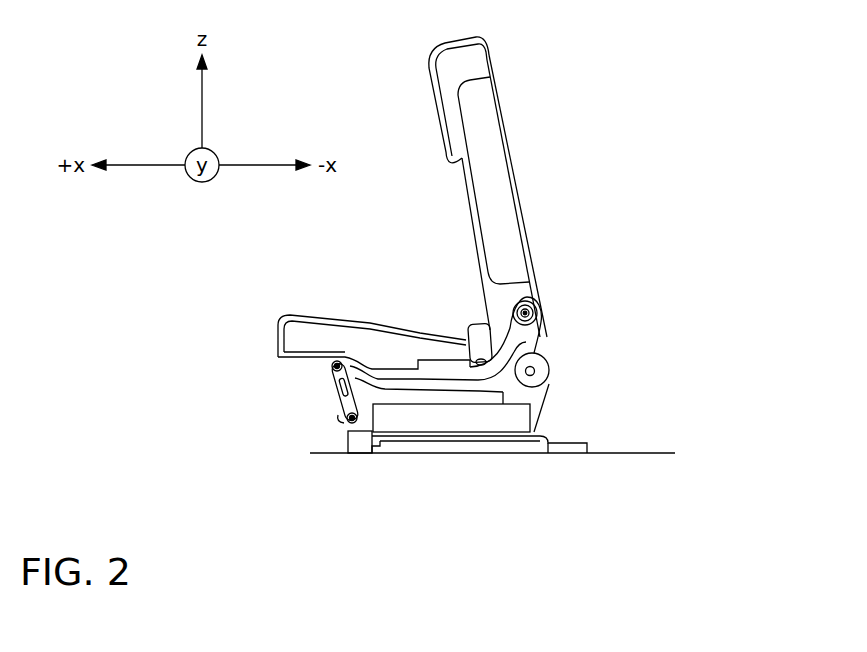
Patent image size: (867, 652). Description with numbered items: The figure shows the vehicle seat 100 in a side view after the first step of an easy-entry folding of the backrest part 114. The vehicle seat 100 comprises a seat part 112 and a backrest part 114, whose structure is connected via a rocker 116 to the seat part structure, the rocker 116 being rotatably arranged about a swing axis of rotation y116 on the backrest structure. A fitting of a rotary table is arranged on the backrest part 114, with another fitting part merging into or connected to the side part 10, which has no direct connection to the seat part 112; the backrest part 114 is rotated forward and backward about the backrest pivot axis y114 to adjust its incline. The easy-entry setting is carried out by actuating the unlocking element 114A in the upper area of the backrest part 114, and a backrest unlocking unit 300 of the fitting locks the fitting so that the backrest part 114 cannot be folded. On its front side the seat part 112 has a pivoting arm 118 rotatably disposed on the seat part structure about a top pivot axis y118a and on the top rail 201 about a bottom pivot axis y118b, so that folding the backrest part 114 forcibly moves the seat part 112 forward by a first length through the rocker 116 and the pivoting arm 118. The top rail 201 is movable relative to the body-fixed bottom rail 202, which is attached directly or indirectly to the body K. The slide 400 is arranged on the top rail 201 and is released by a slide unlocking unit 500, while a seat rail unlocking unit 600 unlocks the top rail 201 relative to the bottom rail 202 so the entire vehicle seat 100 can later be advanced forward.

The vehicle seat 100 is at (656, 98).
The unlocking element 114A is at (500, 52).
The backrest part 114 is at (487, 117).
The seat part 112 is at (332, 333).
The side part 10 is at (500, 400).
The swing axis of rotation y116 is at (527, 313).
The rocker 116 is at (520, 332).
The backrest pivot axis y114 is at (540, 365).
The backrest unlocking unit 300 is at (570, 376).
The slide unlocking unit 500 is at (552, 415).
The body K is at (655, 453).
The bottom rail 202 is at (572, 451).
The slide 400 is at (475, 423).
The seat rail unlocking unit 600 is at (378, 450).
The top rail 201 is at (352, 440).
The pivoting arm 118 is at (347, 397).
The top pivot axis y118a is at (337, 366).
The bottom pivot axis y118b is at (352, 418).